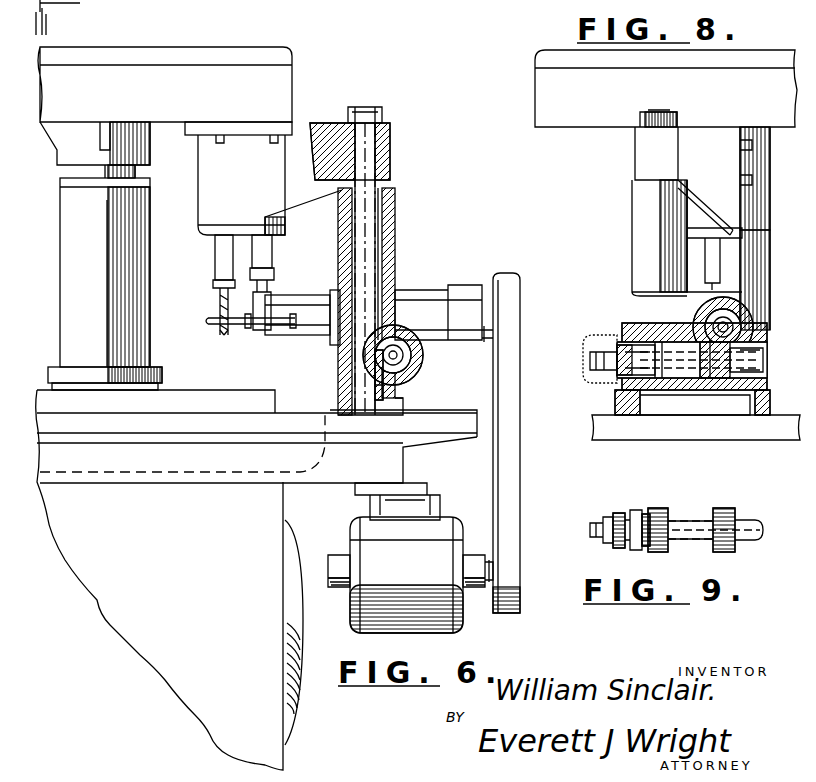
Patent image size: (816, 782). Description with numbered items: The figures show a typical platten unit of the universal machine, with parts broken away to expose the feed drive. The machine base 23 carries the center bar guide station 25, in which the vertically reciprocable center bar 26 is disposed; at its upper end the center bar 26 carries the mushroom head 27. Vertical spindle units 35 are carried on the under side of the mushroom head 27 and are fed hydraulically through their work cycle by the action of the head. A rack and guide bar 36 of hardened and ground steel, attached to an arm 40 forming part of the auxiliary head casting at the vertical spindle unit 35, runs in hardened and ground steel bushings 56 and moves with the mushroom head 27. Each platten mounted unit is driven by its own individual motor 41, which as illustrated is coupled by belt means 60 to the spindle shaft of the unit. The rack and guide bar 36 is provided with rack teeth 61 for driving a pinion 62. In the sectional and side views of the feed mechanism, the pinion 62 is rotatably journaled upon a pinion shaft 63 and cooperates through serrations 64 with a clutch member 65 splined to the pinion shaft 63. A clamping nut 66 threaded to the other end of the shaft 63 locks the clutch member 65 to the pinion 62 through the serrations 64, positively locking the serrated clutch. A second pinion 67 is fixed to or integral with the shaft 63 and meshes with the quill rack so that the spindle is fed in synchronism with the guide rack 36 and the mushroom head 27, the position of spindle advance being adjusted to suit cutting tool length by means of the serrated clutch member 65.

In FIG. 6, the machine base 23 is at (278, 742).
In FIG. 6, the center bar guide station 25 is at (60, 282).
In FIG. 8, the center bar guide station 25 is at (755, 252).
In FIG. 6, the center bar 26 is at (80, 162).
In FIG. 8, the center bar 26 is at (752, 181).
In FIG. 6, the mushroom head 27 is at (293, 63).
In FIG. 8, the mushroom head 27 is at (547, 95).
In FIG. 6, the vertical spindle unit 35 is at (210, 182).
In FIG. 6, the rack and guide bar 36 is at (382, 184).
In FIG. 8, the rack and guide bar 36 is at (640, 186).
In FIG. 6, the arm 40 is at (320, 125).
In FIG. 6, the motor 41 is at (463, 627).
In FIG. 6, the bushing 56 is at (384, 216).
In FIG. 6, the belt means 60 is at (521, 370).
In FIG. 6, the rack teeth 61 is at (378, 352).
In FIG. 6, the pinion 62 is at (410, 368).
In FIG. 8, the pinion 62 is at (665, 394).
In FIG. 9, the pinion 62 is at (658, 508).
In FIG. 8, the pinion shaft 63 is at (766, 350).
In FIG. 9, the pinion shaft 63 is at (675, 518).
In FIG. 8, the serrations 64 is at (645, 345).
In FIG. 9, the serrations 64 is at (646, 512).
In FIG. 8, the clutch member 65 is at (615, 345).
In FIG. 9, the clutch member 65 is at (636, 510).
In FIG. 8, the clamping nut 66 is at (590, 366).
In FIG. 9, the clamping nut 66 is at (606, 517).
In FIG. 9, the pinion 67 is at (730, 508).